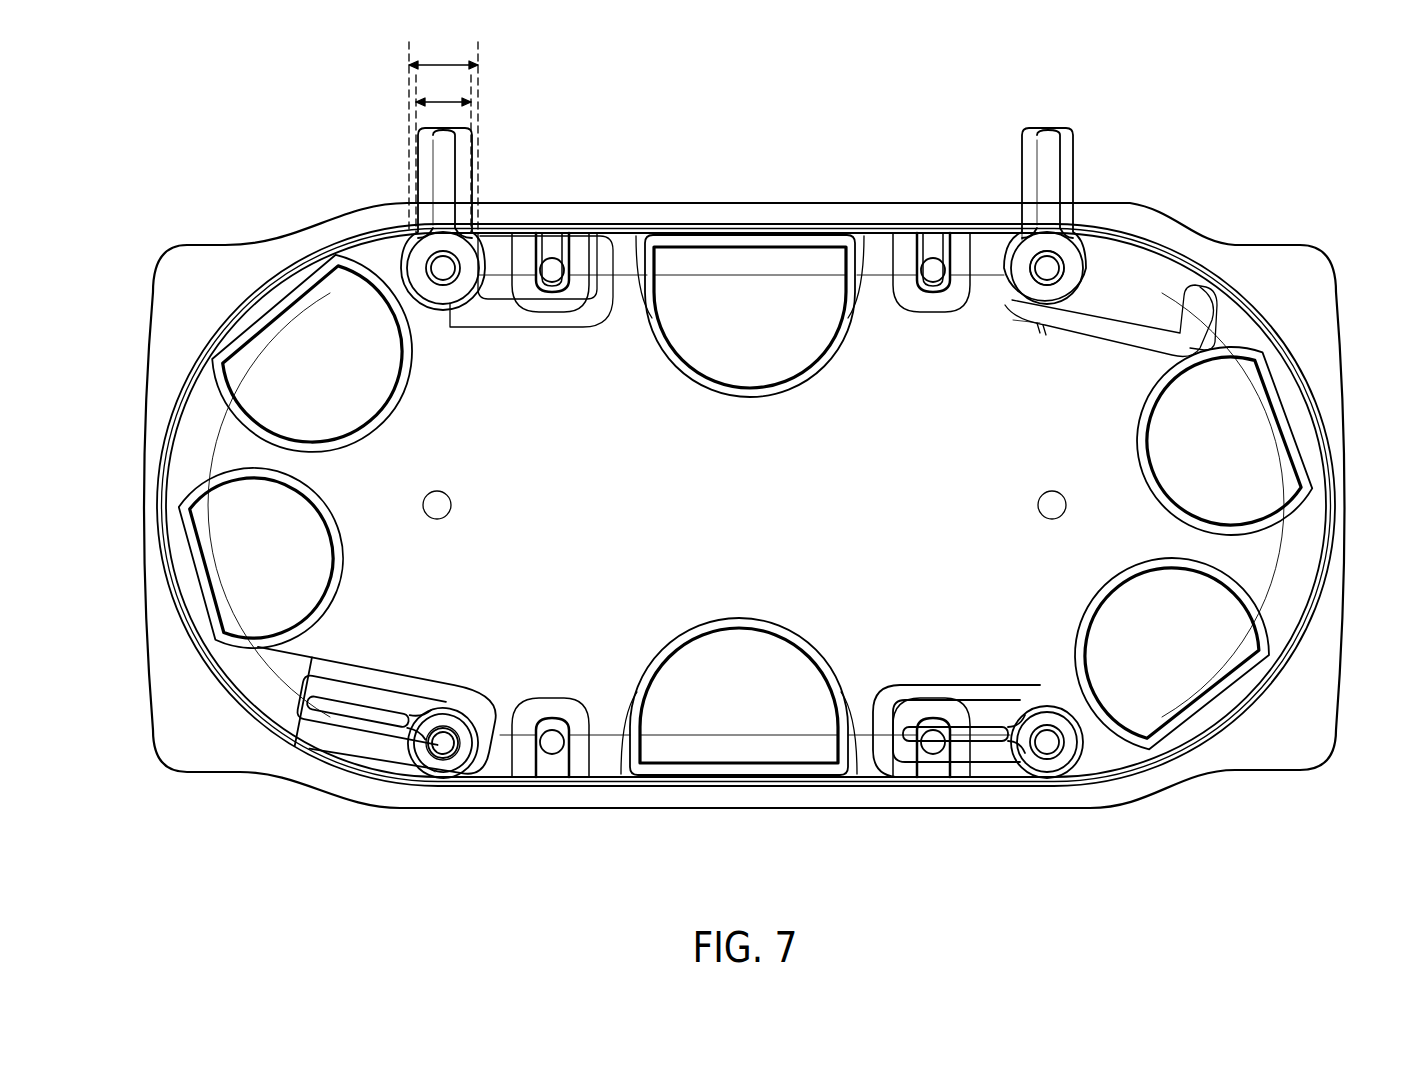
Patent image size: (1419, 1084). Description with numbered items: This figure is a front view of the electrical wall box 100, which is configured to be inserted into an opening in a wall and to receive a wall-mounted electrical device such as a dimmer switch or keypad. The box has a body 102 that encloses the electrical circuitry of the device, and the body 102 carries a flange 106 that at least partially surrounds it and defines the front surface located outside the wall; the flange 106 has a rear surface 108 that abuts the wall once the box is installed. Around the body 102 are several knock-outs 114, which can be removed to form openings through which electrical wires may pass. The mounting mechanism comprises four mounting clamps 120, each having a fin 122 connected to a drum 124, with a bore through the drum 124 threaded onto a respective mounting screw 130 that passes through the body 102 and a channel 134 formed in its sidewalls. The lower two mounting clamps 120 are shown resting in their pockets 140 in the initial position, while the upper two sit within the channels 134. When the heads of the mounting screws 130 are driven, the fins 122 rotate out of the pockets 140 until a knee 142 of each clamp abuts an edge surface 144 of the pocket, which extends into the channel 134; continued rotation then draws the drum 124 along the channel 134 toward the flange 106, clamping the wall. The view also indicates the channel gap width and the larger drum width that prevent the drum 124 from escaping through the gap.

The electrical wall box 100 is at (296, 188).
The body 102 is at (746, 505).
The flange 106 is at (1285, 726).
The rear surface 108 is at (1267, 749).
The knock-outs 114 is at (298, 348).
The mounting clamps 120 is at (498, 152).
The fin 122 is at (1049, 153).
The drum 124 is at (433, 765).
The mounting screws 130 is at (1049, 266).
The channels 134 is at (968, 230).
The pockets 140 is at (510, 255).
The knee 142 is at (1020, 237).
The edge surface 144 is at (1013, 320).